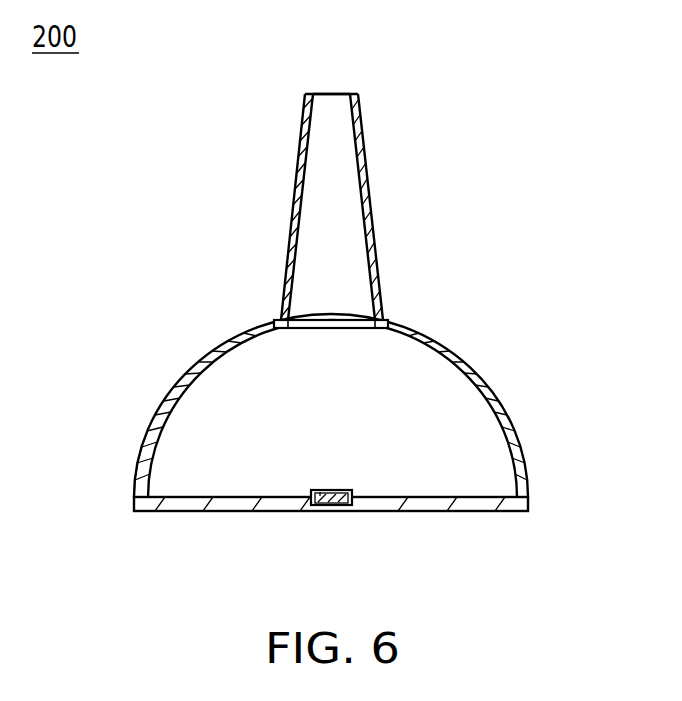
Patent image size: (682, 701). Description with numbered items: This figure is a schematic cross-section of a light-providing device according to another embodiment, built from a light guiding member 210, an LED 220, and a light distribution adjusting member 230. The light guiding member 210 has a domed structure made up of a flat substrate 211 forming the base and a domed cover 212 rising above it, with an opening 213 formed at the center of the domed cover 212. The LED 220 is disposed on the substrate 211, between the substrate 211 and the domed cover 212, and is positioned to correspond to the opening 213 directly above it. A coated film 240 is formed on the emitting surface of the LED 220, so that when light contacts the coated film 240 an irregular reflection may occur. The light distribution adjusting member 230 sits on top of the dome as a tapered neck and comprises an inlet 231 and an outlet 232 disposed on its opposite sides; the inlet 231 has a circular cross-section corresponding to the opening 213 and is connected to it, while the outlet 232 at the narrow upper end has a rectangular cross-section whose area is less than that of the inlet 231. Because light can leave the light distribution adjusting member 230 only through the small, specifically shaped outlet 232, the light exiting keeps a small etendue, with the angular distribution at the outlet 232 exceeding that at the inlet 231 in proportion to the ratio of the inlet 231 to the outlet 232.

The light guiding member 210 is at (510, 420).
The substrate 211 is at (407, 512).
The domed cover 212 is at (148, 427).
The opening 213 is at (332, 328).
The LED 220 is at (336, 506).
The light distribution adjusting member 230 is at (368, 199).
The inlet 231 is at (353, 320).
The outlet 232 is at (327, 112).
The coated film 240 is at (322, 491).